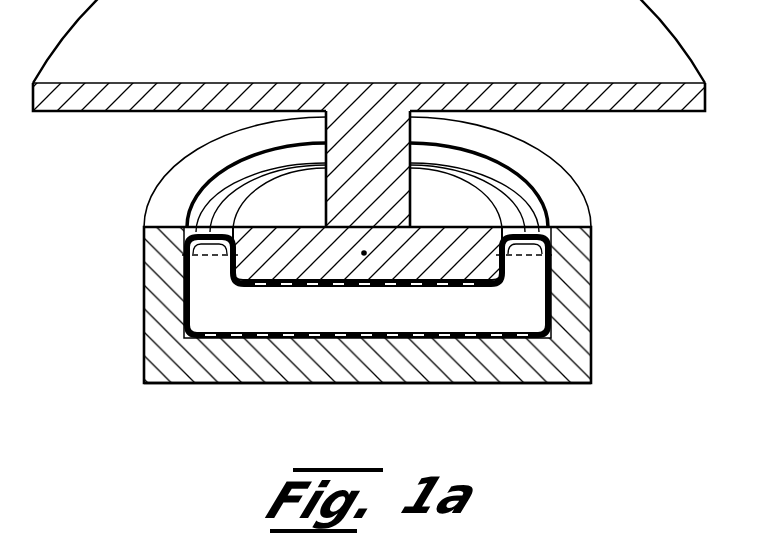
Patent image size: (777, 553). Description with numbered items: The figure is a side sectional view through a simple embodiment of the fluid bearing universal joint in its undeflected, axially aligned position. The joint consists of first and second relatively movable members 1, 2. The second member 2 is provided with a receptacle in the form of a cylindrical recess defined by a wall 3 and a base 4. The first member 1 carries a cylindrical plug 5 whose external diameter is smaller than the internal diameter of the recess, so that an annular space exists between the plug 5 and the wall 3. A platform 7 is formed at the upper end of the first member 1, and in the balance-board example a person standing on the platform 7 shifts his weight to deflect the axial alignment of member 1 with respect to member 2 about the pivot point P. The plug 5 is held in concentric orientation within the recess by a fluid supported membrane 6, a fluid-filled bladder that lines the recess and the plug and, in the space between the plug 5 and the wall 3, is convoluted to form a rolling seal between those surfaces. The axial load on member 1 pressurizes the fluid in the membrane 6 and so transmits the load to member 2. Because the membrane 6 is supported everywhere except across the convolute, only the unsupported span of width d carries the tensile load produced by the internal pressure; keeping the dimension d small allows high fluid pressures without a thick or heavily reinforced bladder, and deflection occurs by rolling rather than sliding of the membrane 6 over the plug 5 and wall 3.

The first relatively movable member 1 is at (372, 178).
The second relatively movable member 2 is at (376, 372).
The wall 3 is at (591, 262).
The base 4 is at (445, 384).
The cylindrical plug 5 is at (444, 229).
The fluid supported membrane 6 is at (290, 289).
The platform 7 is at (369, 42).
The pivot point P is at (367, 266).
The convolute distance d is at (367, 268).